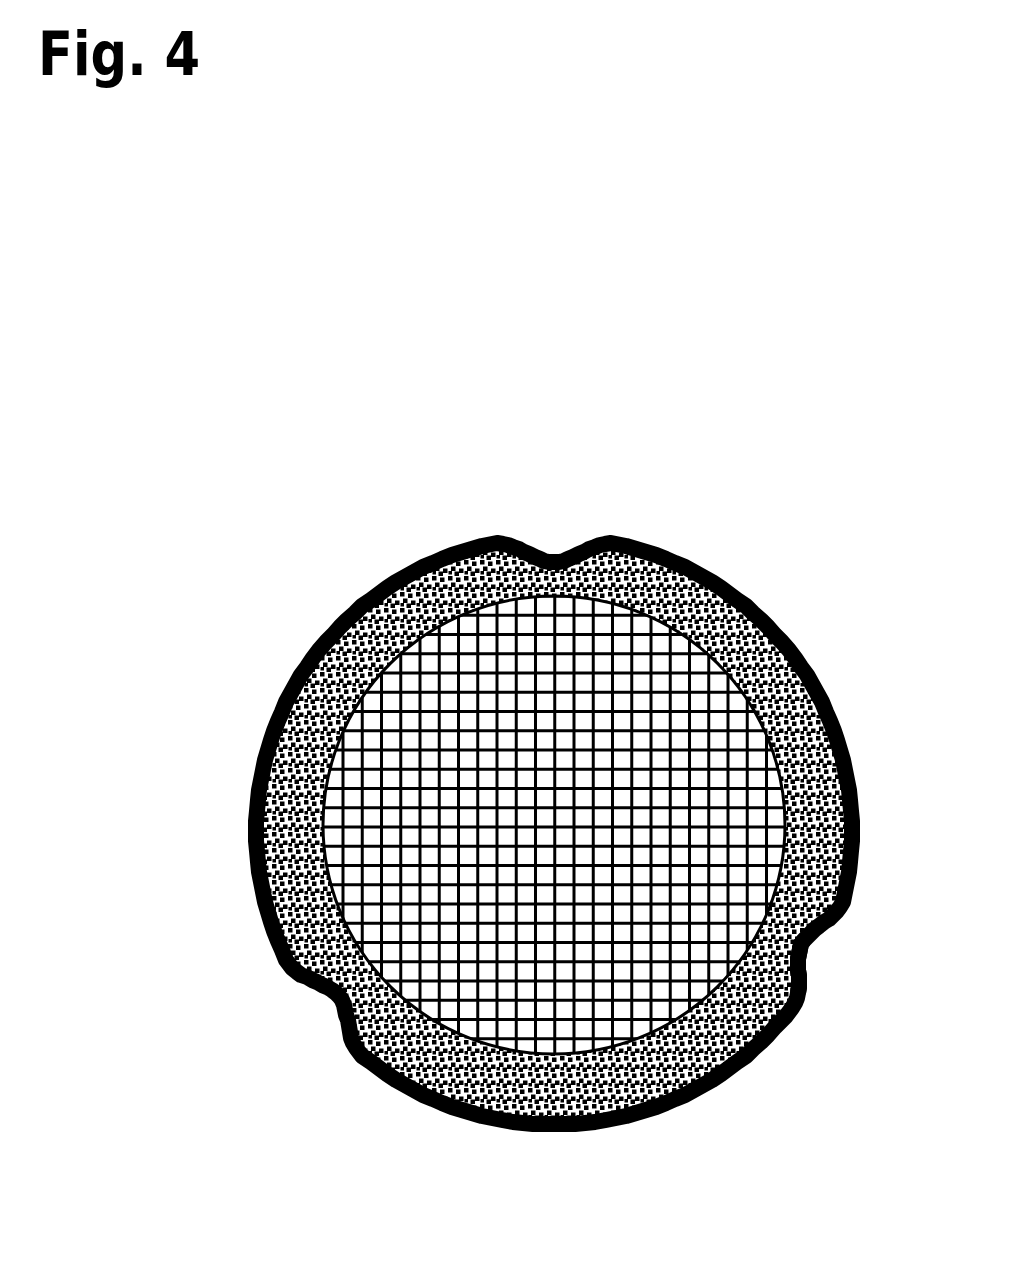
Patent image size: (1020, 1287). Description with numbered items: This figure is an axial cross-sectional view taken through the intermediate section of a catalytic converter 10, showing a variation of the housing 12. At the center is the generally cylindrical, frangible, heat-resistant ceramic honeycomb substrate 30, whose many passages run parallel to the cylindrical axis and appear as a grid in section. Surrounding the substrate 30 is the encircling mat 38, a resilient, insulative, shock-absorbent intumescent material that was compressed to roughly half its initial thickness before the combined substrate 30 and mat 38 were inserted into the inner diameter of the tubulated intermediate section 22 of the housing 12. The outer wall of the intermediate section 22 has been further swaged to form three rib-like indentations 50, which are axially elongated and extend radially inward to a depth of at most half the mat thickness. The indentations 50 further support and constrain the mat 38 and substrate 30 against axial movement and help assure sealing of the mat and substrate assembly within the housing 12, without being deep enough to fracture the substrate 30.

The catalytic converter 10 is at (250, 392).
The housing 12 is at (342, 611).
The intermediate section 22 is at (250, 815).
The ceramic honeycomb substrate 30 is at (410, 765).
The mat 38 is at (683, 603).
The rib-like indentations 50 is at (802, 962).